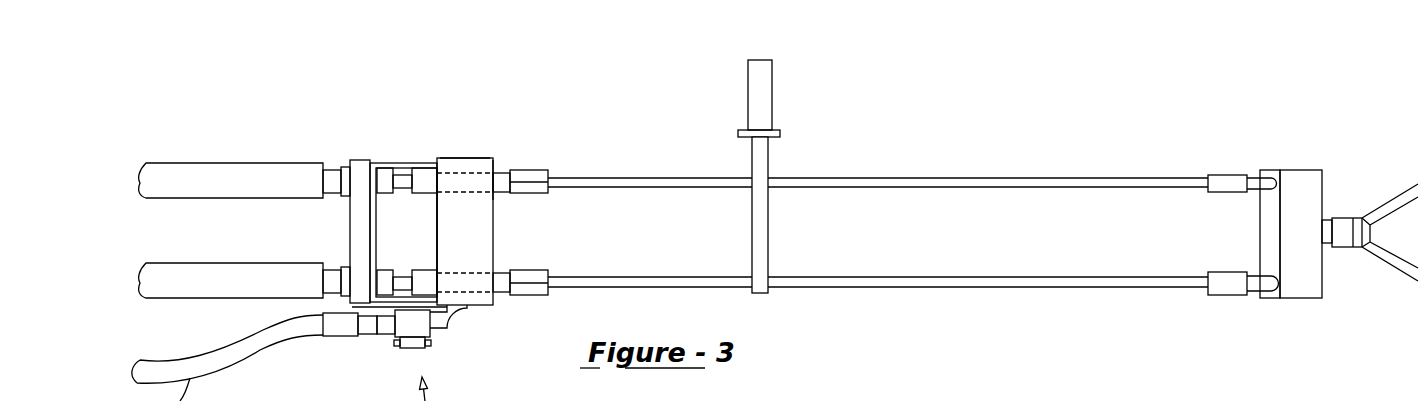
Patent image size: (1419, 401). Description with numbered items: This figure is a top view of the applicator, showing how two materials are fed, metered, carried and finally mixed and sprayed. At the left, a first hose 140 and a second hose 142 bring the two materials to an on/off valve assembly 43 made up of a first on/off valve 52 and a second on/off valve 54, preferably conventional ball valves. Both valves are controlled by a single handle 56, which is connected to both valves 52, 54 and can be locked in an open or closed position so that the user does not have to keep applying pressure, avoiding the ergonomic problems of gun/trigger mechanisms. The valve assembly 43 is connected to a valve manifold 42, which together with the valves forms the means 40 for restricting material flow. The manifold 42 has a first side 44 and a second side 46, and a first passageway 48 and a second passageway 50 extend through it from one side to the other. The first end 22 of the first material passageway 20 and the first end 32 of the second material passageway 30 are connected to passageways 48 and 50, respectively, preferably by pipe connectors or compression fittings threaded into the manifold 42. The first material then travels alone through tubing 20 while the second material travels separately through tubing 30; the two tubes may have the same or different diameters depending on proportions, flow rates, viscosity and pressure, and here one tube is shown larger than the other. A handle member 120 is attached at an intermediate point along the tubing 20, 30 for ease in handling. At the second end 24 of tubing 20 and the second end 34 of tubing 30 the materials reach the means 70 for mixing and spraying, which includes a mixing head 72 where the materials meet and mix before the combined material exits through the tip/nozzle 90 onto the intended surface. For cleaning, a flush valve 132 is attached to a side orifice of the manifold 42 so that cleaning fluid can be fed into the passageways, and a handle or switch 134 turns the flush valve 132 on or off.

The first material passageway 20 is at (1053, 178).
The first end of first material passageway 22 is at (552, 172).
The second end of first material passageway 24 is at (1207, 176).
The second material passageway 30 is at (1082, 288).
The first end of second material passageway 32 is at (546, 298).
The second end of second material passageway 34 is at (1208, 295).
The means for restricting material flow 40 is at (457, 118).
The valve manifold 42 is at (478, 230).
The on/off valve assembly 43 is at (335, 254).
The first side of manifold 44 is at (437, 232).
The second side of manifold 46 is at (493, 160).
The first passageway 48 is at (470, 160).
The second passageway 50 is at (477, 273).
The first on/off valve 52 is at (425, 162).
The second on/off valve 54 is at (420, 268).
The handle 56 is at (358, 160).
The means for mixing and spraying materials 70 is at (1354, 177).
The mixing head 72 is at (1302, 170).
The tip/nozzle 90 is at (1364, 266).
The handle member 120 is at (748, 112).
The flush valve 132 is at (448, 346).
The handle or switch 134 is at (395, 348).
The hose 140 is at (236, 195).
The hose 142 is at (236, 295).